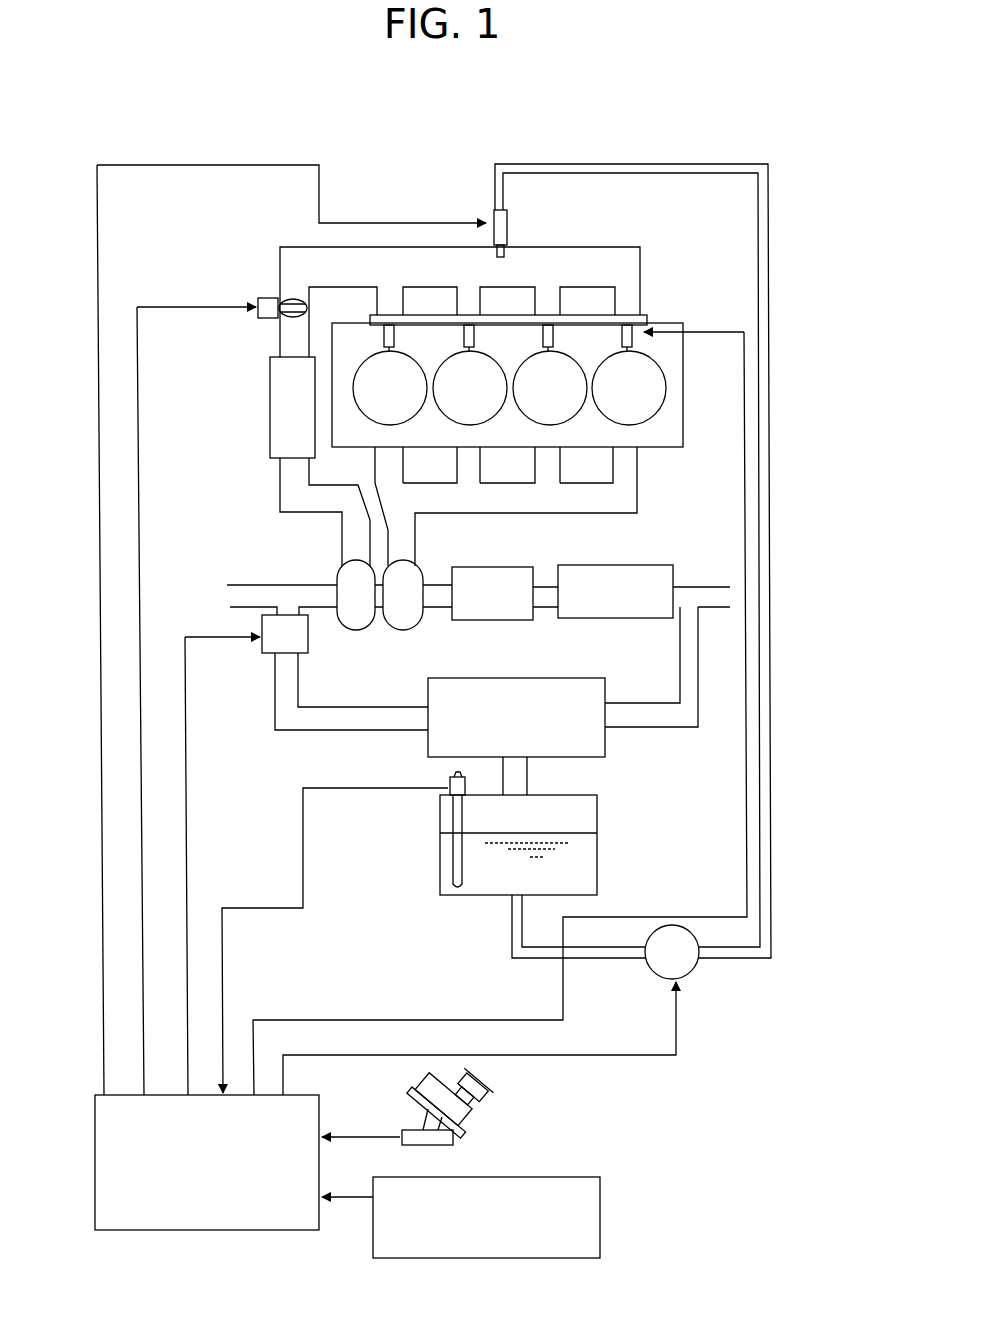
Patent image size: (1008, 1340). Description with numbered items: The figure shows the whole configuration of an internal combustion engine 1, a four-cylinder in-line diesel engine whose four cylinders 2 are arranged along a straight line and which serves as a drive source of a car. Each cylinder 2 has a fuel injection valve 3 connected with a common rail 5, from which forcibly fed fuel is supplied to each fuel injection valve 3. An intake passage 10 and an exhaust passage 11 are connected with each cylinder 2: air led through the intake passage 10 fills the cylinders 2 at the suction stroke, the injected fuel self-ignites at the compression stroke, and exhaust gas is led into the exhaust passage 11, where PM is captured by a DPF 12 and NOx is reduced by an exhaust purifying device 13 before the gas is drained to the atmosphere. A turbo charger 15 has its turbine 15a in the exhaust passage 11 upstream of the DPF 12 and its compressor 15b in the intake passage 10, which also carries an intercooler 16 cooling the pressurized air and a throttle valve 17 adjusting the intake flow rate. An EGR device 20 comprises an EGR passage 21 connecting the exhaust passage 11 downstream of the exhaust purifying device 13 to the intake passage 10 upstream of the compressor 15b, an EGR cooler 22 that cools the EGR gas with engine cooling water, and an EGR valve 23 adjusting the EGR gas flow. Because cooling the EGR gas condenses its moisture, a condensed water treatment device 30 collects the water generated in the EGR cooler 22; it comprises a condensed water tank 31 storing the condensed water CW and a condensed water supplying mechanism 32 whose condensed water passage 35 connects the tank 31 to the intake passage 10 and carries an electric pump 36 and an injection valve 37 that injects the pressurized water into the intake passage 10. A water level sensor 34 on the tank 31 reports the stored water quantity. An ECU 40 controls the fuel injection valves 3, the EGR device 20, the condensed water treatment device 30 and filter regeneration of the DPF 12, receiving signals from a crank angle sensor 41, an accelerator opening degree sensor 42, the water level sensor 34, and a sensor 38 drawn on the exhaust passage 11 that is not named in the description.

The internal combustion engine 1 is at (378, 156).
The cylinder 2 is at (415, 413).
The fuel injection valve 3 is at (395, 333).
The common rail 5 is at (630, 313).
The intake passage 10 is at (409, 415).
The exhaust passage 11 is at (418, 533).
The DPF 12 is at (493, 580).
The exhaust purifying device 13 is at (617, 572).
The turbo charger 15 is at (343, 600).
The turbine 15a is at (408, 620).
The compressor 15b is at (362, 620).
The intercooler 16 is at (278, 408).
The throttle valve 17 is at (272, 297).
The EGR device 20 is at (432, 729).
The EGR passage 21 is at (278, 703).
The EGR cooler 22 is at (588, 738).
The EGR valve 23 is at (260, 625).
The condensed water treatment device 30 is at (492, 854).
The condensed water tank 31 is at (440, 820).
The condensed water supplying mechanism 32 is at (686, 610).
The water level sensor 34 is at (448, 780).
The condensed water passage 35 is at (775, 675).
The pump 36 is at (650, 967).
The injection valve 37 is at (500, 230).
The air-fuel ratio sensor 38 is at (408, 1088).
The ECU 40 is at (95, 1094).
The crank angle sensor 41 is at (603, 1193).
The accelerator opening degree sensor 42 is at (457, 1137).
The condensed water CW is at (580, 862).